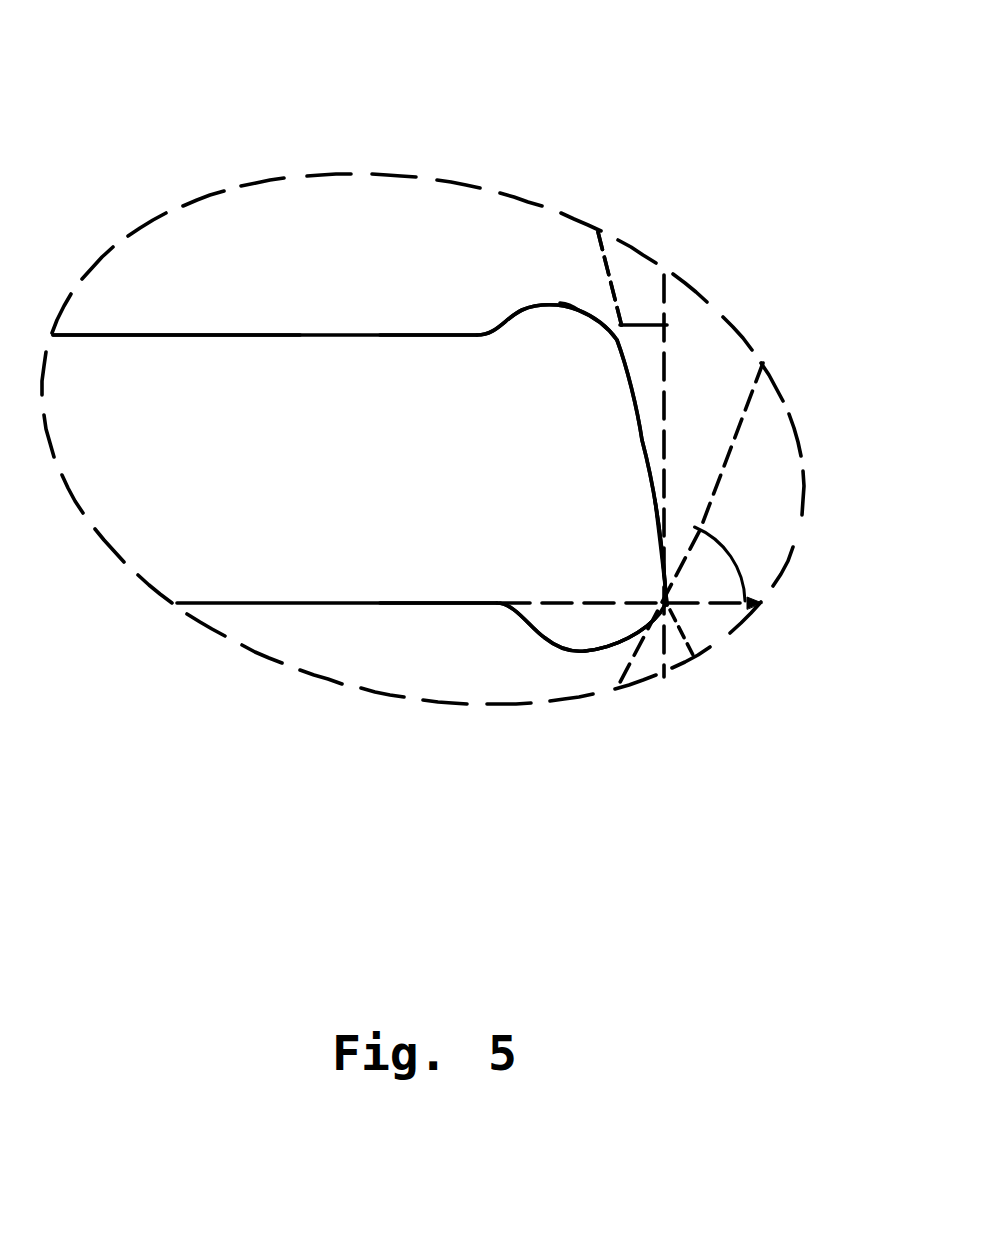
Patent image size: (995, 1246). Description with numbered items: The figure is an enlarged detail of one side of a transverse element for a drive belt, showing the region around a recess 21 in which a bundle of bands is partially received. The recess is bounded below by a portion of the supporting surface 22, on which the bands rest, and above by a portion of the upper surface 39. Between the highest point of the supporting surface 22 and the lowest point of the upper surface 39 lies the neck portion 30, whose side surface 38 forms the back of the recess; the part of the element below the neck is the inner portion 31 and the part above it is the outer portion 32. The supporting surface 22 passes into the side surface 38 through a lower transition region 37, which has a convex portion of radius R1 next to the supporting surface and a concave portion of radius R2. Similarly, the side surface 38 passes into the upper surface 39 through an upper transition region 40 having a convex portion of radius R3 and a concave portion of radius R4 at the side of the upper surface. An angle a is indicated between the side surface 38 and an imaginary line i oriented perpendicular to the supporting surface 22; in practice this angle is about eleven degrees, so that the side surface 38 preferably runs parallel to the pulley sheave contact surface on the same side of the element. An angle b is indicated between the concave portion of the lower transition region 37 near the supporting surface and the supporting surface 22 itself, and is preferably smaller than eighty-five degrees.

The recess 21 is at (332, 432).
The supporting surface 22 is at (299, 603).
The neck portion 30 is at (707, 435).
The inner portion 31 is at (390, 655).
The outer portion 32 is at (388, 250).
The lower transition region 37 is at (565, 648).
The side surface 38 is at (647, 452).
The upper surface 39 is at (204, 337).
The upper transition region 40 is at (602, 328).
The angle a is at (632, 279).
The angle b is at (690, 525).
The imaginary line i is at (703, 300).
The radius of convex portion of lower transition region R1 is at (502, 605).
The radius of concave portion of lower transition region R2 is at (613, 645).
The radius of convex portion of upper transition region R3 is at (492, 328).
The radius of concave portion of upper transition region R4 is at (565, 312).